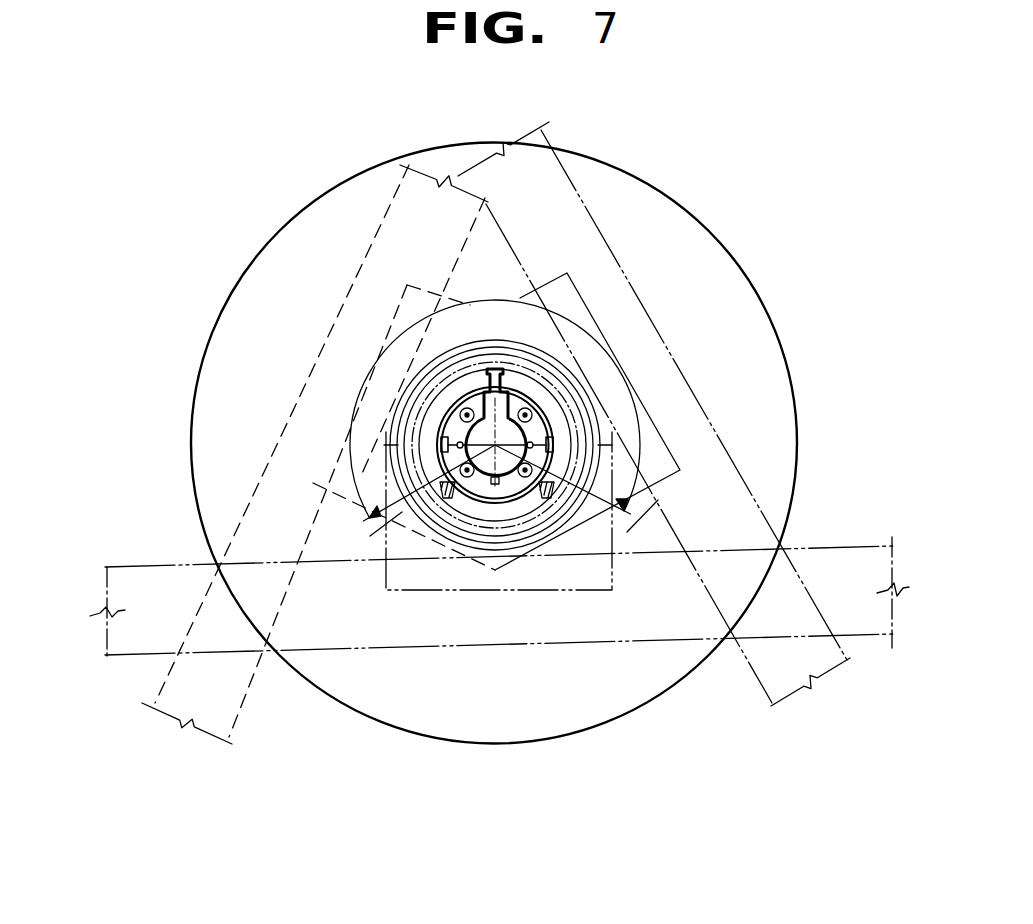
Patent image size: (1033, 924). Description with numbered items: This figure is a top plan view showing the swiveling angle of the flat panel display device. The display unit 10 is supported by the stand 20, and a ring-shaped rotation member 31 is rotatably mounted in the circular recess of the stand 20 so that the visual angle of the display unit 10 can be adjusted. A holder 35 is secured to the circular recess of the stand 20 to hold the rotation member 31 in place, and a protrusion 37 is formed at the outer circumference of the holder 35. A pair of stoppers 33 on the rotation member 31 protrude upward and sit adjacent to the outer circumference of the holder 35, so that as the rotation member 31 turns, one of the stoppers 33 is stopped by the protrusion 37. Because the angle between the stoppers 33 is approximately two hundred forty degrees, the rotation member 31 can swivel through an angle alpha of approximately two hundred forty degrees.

The display unit 10 is at (497, 568).
The stand 20 is at (252, 262).
The rotation member 31 is at (394, 427).
The stoppers 33 is at (448, 492).
The holder 35 is at (538, 416).
The protrusion 37 is at (505, 368).